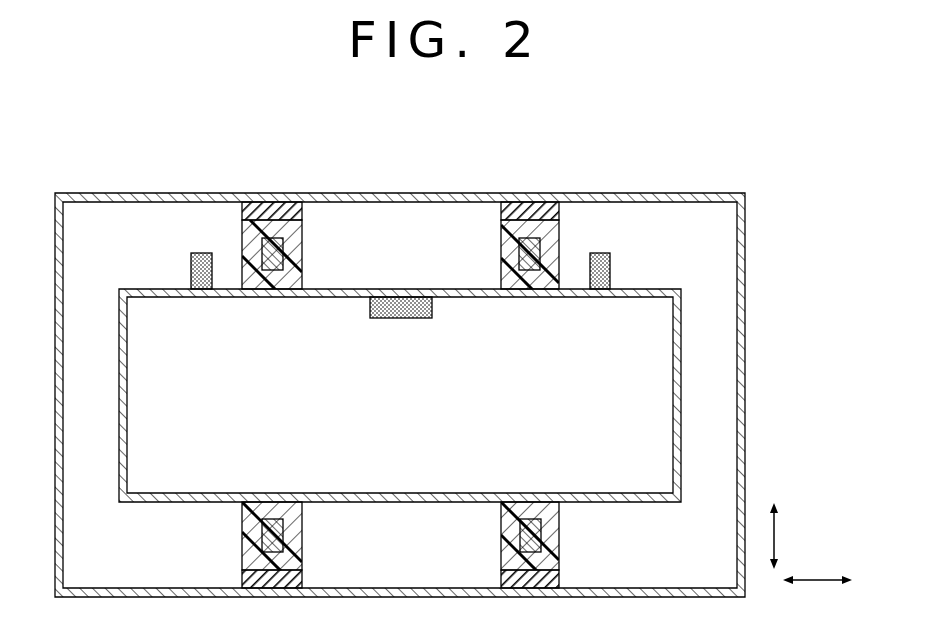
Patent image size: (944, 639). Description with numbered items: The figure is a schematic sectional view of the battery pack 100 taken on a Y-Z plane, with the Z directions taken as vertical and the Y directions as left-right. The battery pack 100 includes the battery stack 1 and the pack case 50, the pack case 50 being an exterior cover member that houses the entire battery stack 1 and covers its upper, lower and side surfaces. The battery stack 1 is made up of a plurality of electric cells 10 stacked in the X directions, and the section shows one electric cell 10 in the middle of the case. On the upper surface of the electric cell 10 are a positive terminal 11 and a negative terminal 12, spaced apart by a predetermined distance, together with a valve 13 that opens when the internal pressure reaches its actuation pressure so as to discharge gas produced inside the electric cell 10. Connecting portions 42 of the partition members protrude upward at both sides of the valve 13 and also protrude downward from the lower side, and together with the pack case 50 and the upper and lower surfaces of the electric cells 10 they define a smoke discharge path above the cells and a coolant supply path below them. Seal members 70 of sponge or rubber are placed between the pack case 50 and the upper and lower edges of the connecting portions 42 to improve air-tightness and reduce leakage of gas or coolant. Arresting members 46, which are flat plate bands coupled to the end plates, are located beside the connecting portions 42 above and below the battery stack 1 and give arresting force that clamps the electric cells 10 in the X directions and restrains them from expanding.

The battery pack 100 is at (116, 182).
The pack case 50 is at (745, 240).
The battery stack 1 is at (677, 280).
The electric cell 10 is at (400, 395).
The positive terminal 11 is at (191, 268).
The negative terminal 12 is at (611, 268).
The valve 13 is at (370, 307).
The seal member 70 is at (299, 213).
The connecting portion 42 is at (299, 245).
The arresting member 46 is at (284, 256).